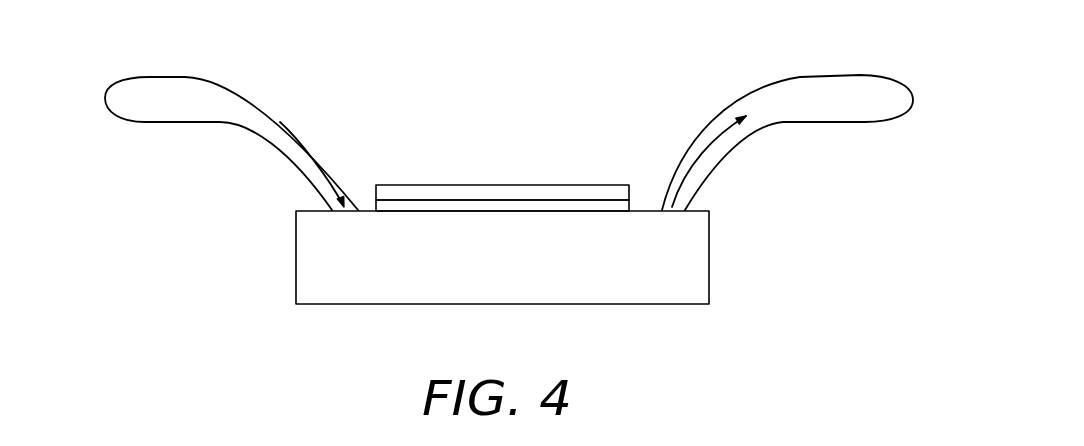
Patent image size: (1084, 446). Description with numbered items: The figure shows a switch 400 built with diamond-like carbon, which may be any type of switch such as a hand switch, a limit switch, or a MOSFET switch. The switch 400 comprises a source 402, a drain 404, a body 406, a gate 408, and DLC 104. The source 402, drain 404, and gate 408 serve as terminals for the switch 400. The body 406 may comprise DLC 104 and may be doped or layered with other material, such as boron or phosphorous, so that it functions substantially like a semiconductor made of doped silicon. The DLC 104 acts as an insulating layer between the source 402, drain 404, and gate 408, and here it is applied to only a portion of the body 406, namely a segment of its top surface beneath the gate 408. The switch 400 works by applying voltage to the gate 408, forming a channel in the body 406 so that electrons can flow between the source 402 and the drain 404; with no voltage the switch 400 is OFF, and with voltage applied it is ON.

The switch 400 is at (502, 195).
The source 402 is at (142, 122).
The drain 404 is at (867, 123).
The body 406 is at (709, 248).
The gate 408 is at (435, 198).
The DLC 104 is at (600, 207).